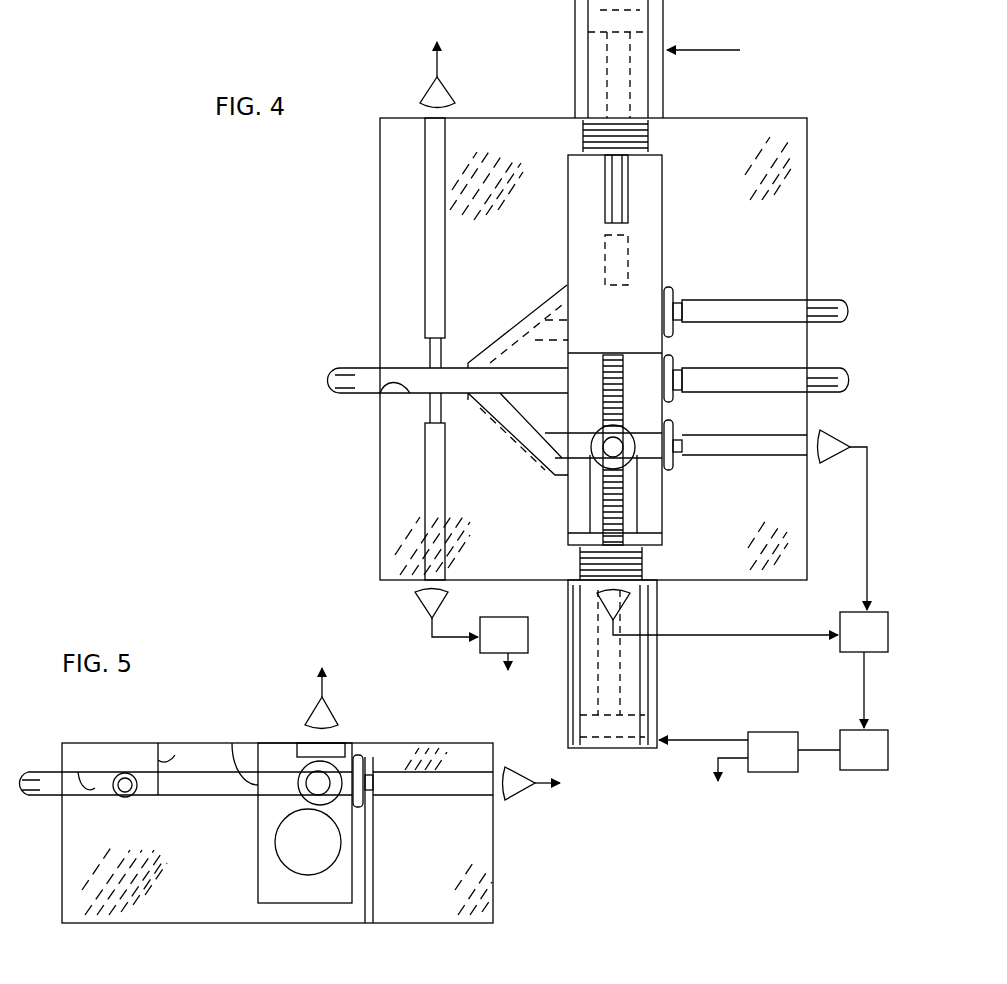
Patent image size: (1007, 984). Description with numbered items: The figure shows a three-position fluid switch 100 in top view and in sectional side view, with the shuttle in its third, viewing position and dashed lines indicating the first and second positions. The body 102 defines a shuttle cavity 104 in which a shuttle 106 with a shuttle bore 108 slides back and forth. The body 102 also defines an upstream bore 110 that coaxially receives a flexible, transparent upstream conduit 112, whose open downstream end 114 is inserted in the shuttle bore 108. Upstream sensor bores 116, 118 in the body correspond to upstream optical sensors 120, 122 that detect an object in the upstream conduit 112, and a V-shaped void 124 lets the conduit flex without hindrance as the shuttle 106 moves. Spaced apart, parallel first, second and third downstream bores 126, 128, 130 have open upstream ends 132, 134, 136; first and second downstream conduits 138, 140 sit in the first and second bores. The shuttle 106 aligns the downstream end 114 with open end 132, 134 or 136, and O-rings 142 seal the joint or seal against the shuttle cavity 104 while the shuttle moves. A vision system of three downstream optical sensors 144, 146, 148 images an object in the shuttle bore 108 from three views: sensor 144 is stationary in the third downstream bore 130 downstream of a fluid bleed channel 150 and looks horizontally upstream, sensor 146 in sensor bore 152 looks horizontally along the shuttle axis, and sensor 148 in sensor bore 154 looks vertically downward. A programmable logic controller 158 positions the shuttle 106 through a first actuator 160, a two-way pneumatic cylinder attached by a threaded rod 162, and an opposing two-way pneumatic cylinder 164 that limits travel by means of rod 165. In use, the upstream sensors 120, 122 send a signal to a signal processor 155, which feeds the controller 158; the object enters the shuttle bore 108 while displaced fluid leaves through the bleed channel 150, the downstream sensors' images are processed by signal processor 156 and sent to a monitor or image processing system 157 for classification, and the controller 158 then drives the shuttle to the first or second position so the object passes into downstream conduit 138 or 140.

In FIG. 4, the three-position fluid switch 100 is at (830, 150).
In FIG. 5, the three-position fluid switch 100 is at (517, 882).
In FIG. 4, the body 102 is at (800, 210).
In FIG. 5, the body 102 is at (138, 923).
In FIG. 4, the shuttle cavity 104 is at (570, 245).
In FIG. 5, the shuttle cavity 104 is at (308, 903).
In FIG. 4, the shuttle 106 is at (645, 353).
In FIG. 5, the shuttle 106 is at (258, 870).
In FIG. 4, the shuttle bore 108 is at (555, 462).
In FIG. 5, the shuttle bore 108 is at (232, 743).
In FIG. 4, the upstream bore 110 is at (385, 395).
In FIG. 5, the upstream bore 110 is at (80, 772).
In FIG. 4, the upstream conduit 112 is at (358, 368).
In FIG. 5, the upstream conduit 112 is at (38, 772).
In FIG. 4, the open downstream end 114 is at (662, 430).
In FIG. 5, the open downstream end 114 is at (365, 800).
In FIG. 4, the upstream sensor bore 116 is at (440, 170).
In FIG. 4, the upstream sensor bore 118 is at (420, 490).
In FIG. 5, the upstream sensor bore 118 is at (133, 772).
In FIG. 4, the upstream optical sensor 120 is at (430, 95).
In FIG. 4, the upstream optical sensor 122 is at (415, 595).
In FIG. 4, the V-shaped void 124 is at (520, 345).
In FIG. 5, the V-shaped void 124 is at (178, 748).
In FIG. 4, the first downstream bore 126 is at (775, 303).
In FIG. 4, the second downstream bore 128 is at (775, 370).
In FIG. 4, the third downstream bore 130 is at (755, 437).
In FIG. 5, the third downstream bore 130 is at (445, 785).
In FIG. 4, the open upstream end 132 is at (682, 305).
In FIG. 4, the open upstream end 134 is at (682, 378).
In FIG. 4, the open upstream end 136 is at (682, 455).
In FIG. 5, the open upstream end 136 is at (372, 775).
In FIG. 4, the first downstream conduit 138 is at (825, 302).
In FIG. 4, the second downstream conduit 140 is at (825, 370).
In FIG. 4, the O-rings 142 is at (672, 285).
In FIG. 5, the O-rings 142 is at (360, 755).
In FIG. 4, the downstream optical sensor 144 is at (835, 463).
In FIG. 5, the downstream optical sensor 144 is at (522, 800).
In FIG. 4, the downstream optical sensor 146 is at (640, 628).
In FIG. 5, the downstream optical sensor 148 is at (315, 712).
In FIG. 4, the fluid bleed channel 150 is at (682, 450).
In FIG. 5, the fluid bleed channel 150 is at (370, 900).
In FIG. 4, the sensor bore 152 is at (635, 500).
In FIG. 5, the sensor bore 152 is at (300, 790).
In FIG. 4, the sensor bore 154 is at (590, 435).
In FIG. 5, the sensor bore 154 is at (330, 757).
In FIG. 4, the signal processor 155 is at (500, 617).
In FIG. 4, the signal processor 156 is at (840, 650).
In FIG. 4, the monitor or image processing system 157 is at (848, 730).
In FIG. 4, the programmable logic controller 158 is at (765, 732).
In FIG. 4, the first actuator 160 is at (655, 715).
In FIG. 4, the threaded rod 162 is at (600, 500).
In FIG. 4, the second two-way pneumatic cylinder 164 is at (575, 52).
In FIG. 4, the rod 165 is at (620, 205).